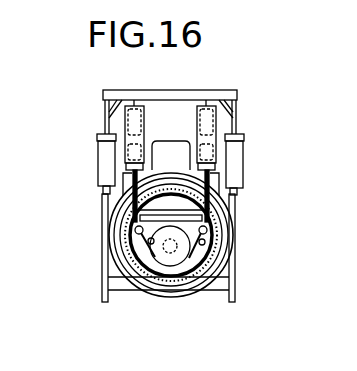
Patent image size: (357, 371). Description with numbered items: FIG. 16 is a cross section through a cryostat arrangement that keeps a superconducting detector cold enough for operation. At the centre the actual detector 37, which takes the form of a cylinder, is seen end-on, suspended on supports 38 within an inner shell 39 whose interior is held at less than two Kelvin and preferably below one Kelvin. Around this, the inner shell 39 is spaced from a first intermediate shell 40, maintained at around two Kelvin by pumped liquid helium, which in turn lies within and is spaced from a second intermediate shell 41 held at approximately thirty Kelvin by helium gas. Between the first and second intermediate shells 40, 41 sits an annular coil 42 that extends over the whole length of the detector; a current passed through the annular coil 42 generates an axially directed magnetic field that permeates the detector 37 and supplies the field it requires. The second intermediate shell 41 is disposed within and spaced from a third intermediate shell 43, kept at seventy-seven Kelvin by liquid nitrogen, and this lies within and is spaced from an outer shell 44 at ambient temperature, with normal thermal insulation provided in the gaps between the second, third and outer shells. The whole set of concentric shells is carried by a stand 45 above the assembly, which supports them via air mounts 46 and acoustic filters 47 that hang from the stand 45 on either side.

The detector 37 is at (147, 242).
The supports 38 is at (130, 181).
The inner shell 39 is at (206, 241).
The first intermediate shell 40 is at (142, 249).
The second intermediate shell 41 is at (218, 282).
The annular coil 42 is at (153, 293).
The third intermediate shell 43 is at (182, 291).
The outer shell 44 is at (116, 285).
The stand 45 is at (220, 96).
The air mounts 46 is at (242, 141).
The acoustic filters 47 is at (217, 154).